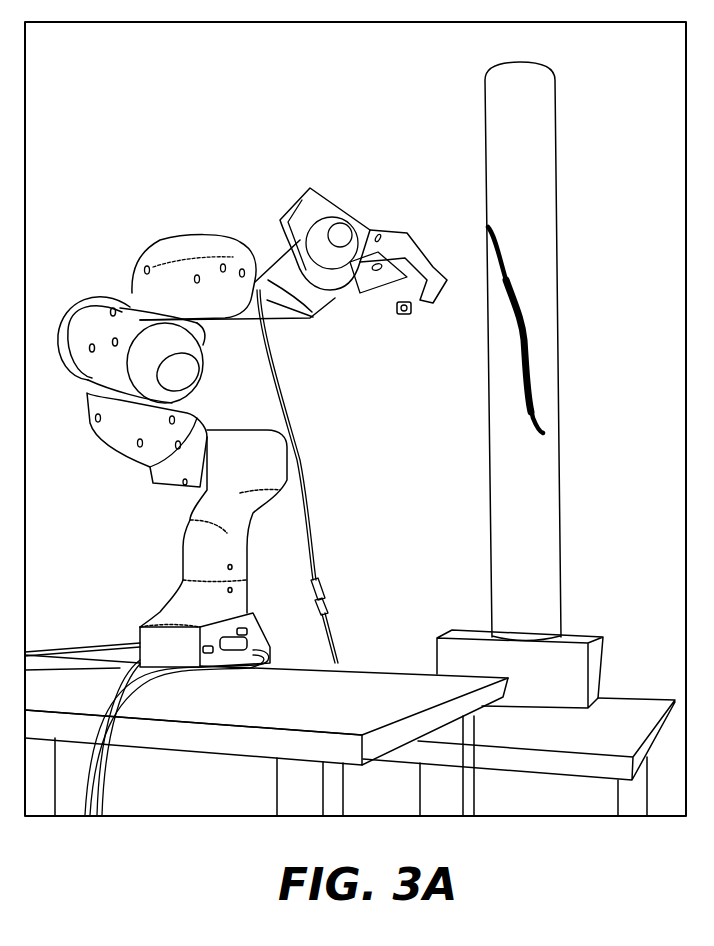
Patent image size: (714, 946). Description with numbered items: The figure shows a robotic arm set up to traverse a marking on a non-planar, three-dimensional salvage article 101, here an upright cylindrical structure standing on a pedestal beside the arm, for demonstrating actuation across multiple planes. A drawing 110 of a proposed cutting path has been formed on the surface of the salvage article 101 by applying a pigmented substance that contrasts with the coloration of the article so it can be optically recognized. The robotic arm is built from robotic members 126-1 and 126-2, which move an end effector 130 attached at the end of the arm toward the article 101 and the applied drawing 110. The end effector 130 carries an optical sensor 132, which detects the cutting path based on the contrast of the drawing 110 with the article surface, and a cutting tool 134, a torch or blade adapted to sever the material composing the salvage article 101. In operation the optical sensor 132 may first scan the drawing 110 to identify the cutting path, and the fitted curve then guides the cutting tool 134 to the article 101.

The salvage article 101 is at (533, 175).
The drawing 110 is at (523, 327).
The robotic member 126-1 is at (112, 432).
The robotic member 126-2 is at (179, 250).
The end effector 130 is at (377, 230).
The optical sensor 132 is at (440, 260).
The cutting tool 134 is at (403, 314).